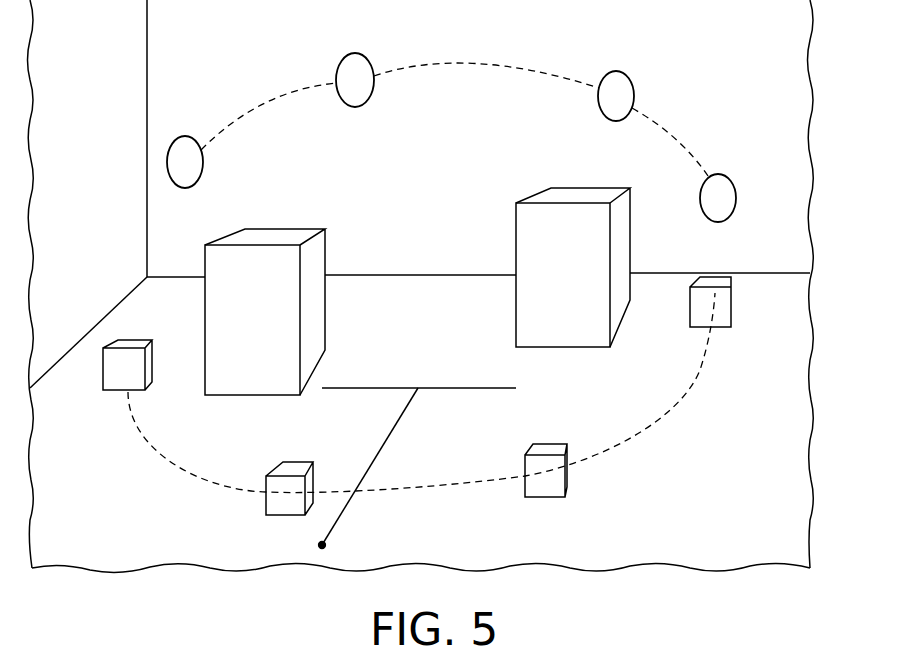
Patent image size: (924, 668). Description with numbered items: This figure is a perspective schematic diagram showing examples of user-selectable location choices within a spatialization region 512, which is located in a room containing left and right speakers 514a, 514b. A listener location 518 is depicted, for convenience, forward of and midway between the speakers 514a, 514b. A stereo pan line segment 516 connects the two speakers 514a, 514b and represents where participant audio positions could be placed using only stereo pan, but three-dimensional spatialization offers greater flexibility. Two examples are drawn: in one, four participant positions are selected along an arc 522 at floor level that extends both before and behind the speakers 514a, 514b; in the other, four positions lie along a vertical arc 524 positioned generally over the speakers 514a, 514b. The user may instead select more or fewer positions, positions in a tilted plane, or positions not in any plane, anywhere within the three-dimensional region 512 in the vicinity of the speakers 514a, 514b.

The spatialization region 512 is at (762, 107).
The left speaker 514a is at (268, 232).
The right speaker 514b is at (573, 196).
The stereo pan line segment 516 is at (373, 388).
The listener location 518 is at (326, 545).
The arc at floor level 522 is at (640, 432).
The vertical arc 524 is at (656, 118).